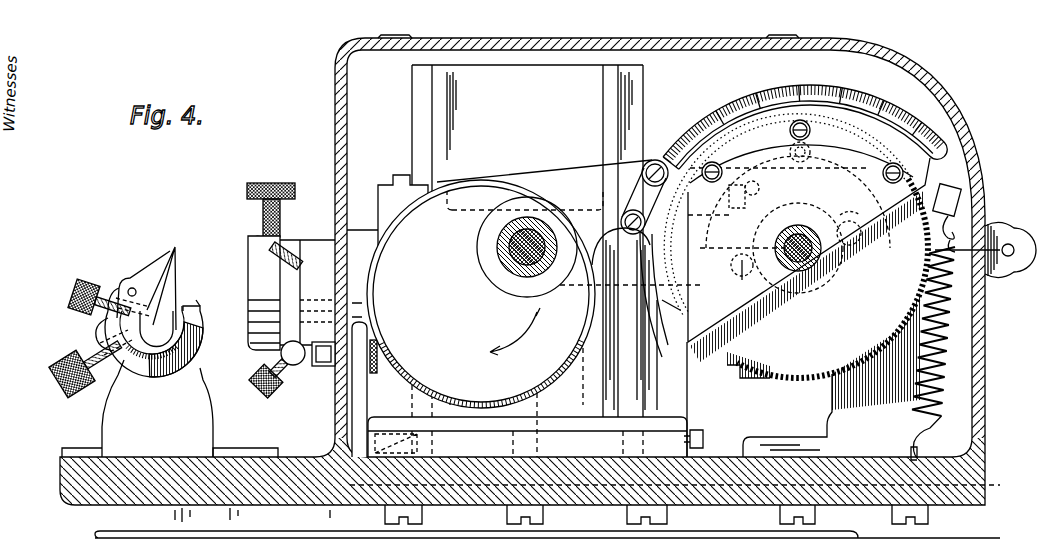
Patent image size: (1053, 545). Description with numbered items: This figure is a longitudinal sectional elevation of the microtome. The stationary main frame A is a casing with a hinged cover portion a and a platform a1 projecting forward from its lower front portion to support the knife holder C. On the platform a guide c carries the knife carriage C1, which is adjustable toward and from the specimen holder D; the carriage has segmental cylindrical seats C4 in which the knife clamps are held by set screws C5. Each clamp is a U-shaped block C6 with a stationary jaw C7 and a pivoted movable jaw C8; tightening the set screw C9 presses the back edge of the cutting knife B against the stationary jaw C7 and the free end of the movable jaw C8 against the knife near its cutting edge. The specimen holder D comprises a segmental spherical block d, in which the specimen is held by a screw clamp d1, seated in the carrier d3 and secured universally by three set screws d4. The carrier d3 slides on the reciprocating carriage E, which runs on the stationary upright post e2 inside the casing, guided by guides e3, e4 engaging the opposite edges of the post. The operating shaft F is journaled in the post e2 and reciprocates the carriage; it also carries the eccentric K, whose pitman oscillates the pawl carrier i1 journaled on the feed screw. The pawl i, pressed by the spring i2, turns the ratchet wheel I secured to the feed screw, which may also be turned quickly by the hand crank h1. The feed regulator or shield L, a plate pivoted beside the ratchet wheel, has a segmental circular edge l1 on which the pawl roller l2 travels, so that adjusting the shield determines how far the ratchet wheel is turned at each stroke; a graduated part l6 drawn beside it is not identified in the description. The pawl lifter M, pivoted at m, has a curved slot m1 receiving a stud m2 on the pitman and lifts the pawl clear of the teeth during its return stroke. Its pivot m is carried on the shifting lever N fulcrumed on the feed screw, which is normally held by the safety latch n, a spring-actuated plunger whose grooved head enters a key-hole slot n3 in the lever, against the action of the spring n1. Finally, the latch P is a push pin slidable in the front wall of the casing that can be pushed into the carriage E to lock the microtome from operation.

The hinged cover portion a is at (657, 41).
The platform a1 is at (106, 502).
The guide c is at (243, 448).
The knife carriage C1 is at (106, 432).
The knife holder C is at (153, 308).
The segmental cylindrical seats C4 is at (102, 334).
The set screws C5 is at (56, 384).
The U-shaped block C6 is at (146, 332).
The stationary jaw C7 is at (180, 280).
The movable jaw C8 is at (155, 266).
The set screw C9 is at (76, 282).
The cutting knife B is at (170, 296).
The screw clamp d1 is at (262, 214).
The specimen holder D is at (258, 232).
The segmental spherical block d is at (249, 306).
The carrier d3 is at (307, 292).
The set screws d4 is at (290, 272).
The latch P is at (327, 369).
The upright post e2 is at (527, 261).
The guide e3 is at (396, 422).
The guide e4 is at (663, 356).
The reciprocating carriage E is at (387, 304).
The eccentric K is at (485, 294).
The operating shaft F is at (505, 240).
The antifriction roller l2 is at (656, 160).
The spring i2 is at (624, 199).
The pawl i is at (633, 215).
The segmental circular edge l1 is at (657, 308).
The pawl lifter M is at (660, 292).
The ratchet wheel I is at (796, 285).
The feed regulator L is at (745, 241).
The graduated scale l6 is at (805, 118).
The crank h1 is at (733, 198).
The curved slot m1 is at (756, 177).
The stud m2 is at (806, 160).
The pivot m is at (743, 281).
The pawl carrier i1 is at (718, 244).
The key-hole slot n3 is at (862, 212).
The safety latch n is at (851, 243).
The shifting lever N is at (947, 209).
The spring n1 is at (952, 338).
The main frame A is at (985, 293).